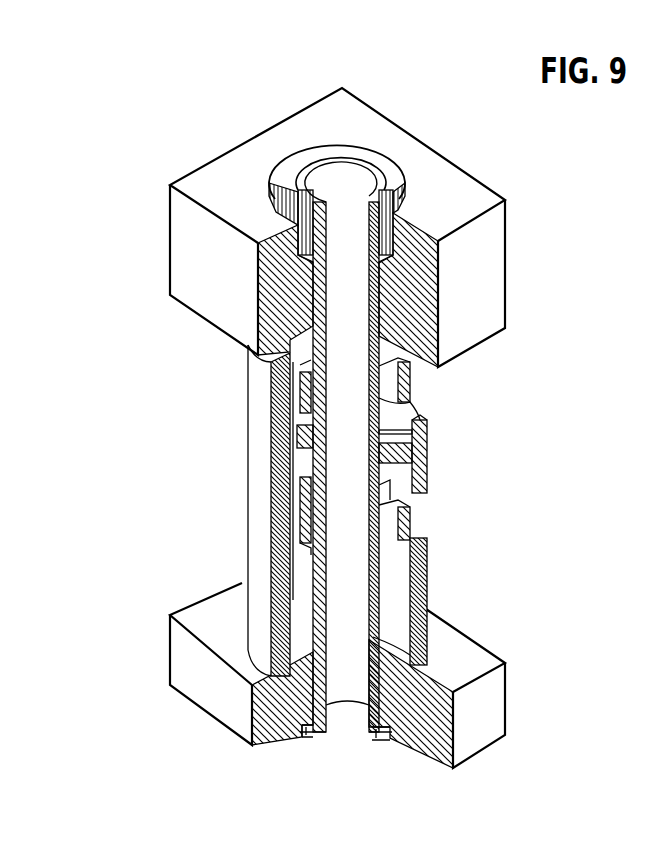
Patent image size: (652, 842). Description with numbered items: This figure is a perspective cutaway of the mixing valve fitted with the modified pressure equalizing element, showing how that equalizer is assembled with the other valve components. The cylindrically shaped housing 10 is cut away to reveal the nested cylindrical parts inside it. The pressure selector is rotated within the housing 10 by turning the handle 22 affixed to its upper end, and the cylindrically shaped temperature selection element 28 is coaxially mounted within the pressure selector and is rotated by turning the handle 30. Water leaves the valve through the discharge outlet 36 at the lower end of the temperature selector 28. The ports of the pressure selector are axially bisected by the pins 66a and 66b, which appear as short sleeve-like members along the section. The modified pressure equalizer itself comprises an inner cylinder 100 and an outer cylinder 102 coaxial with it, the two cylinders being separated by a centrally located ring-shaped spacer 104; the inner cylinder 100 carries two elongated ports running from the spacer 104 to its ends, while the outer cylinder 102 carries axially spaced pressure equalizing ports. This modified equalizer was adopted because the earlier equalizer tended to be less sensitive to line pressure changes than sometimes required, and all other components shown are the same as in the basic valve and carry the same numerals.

The handle 22 is at (482, 272).
The handle 30 is at (213, 693).
The housing 10 is at (258, 425).
The outer cylinder 102 is at (293, 518).
The temperature selection element 28 is at (345, 595).
The discharge outlet 36 is at (317, 733).
The pin 66a is at (410, 402).
The inner cylinder 100 is at (380, 430).
The ring-shaped spacer 104 is at (385, 457).
The pin 66b is at (410, 533).